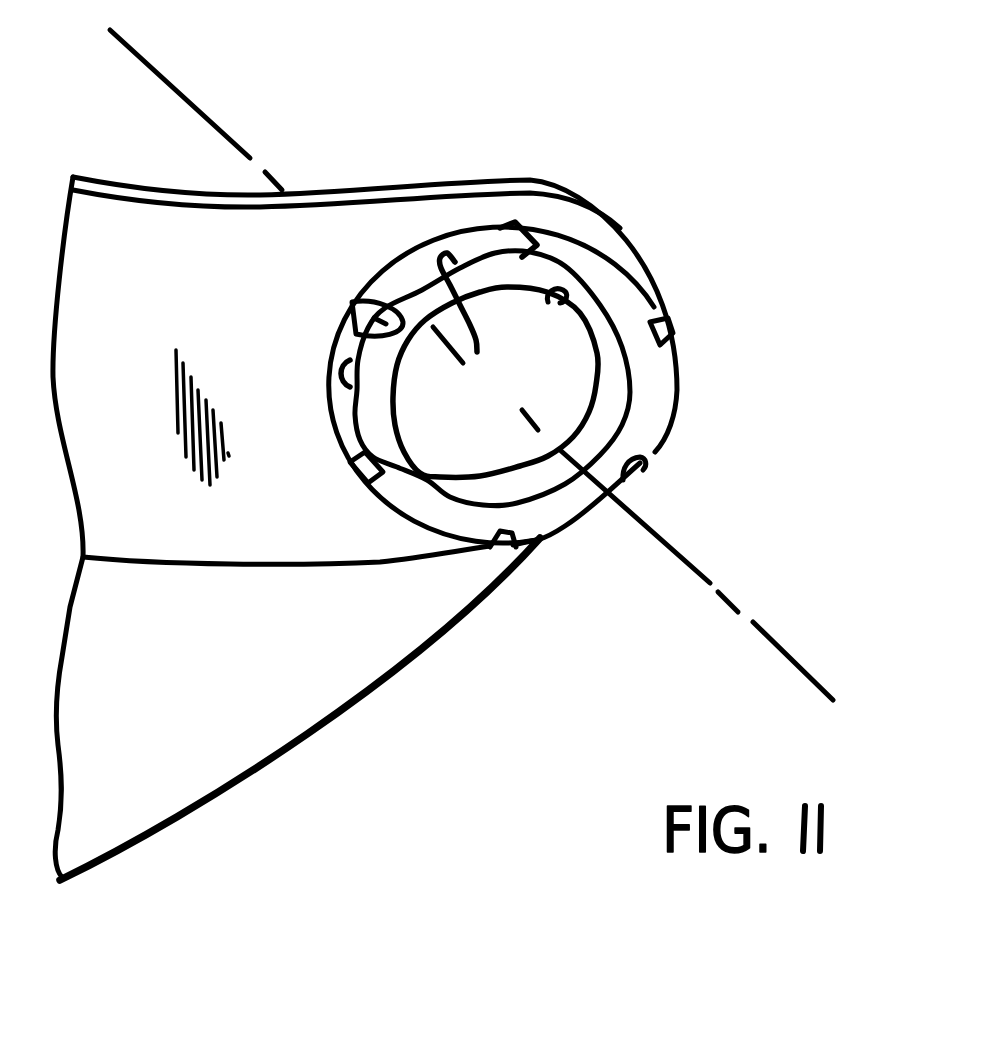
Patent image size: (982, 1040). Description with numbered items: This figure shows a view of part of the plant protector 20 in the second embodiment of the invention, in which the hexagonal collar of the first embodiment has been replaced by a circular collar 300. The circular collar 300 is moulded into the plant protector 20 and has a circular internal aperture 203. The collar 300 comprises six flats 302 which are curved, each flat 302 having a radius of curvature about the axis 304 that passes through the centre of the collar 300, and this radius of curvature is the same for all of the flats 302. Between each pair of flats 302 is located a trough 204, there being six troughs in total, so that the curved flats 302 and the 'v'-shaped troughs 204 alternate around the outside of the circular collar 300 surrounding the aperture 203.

The plant protector 20 is at (190, 318).
The circular collar 300 is at (657, 388).
The flat 302 is at (555, 242).
The trough 204 is at (375, 312).
The circular internal aperture 203 is at (560, 297).
The axis 304 is at (688, 568).